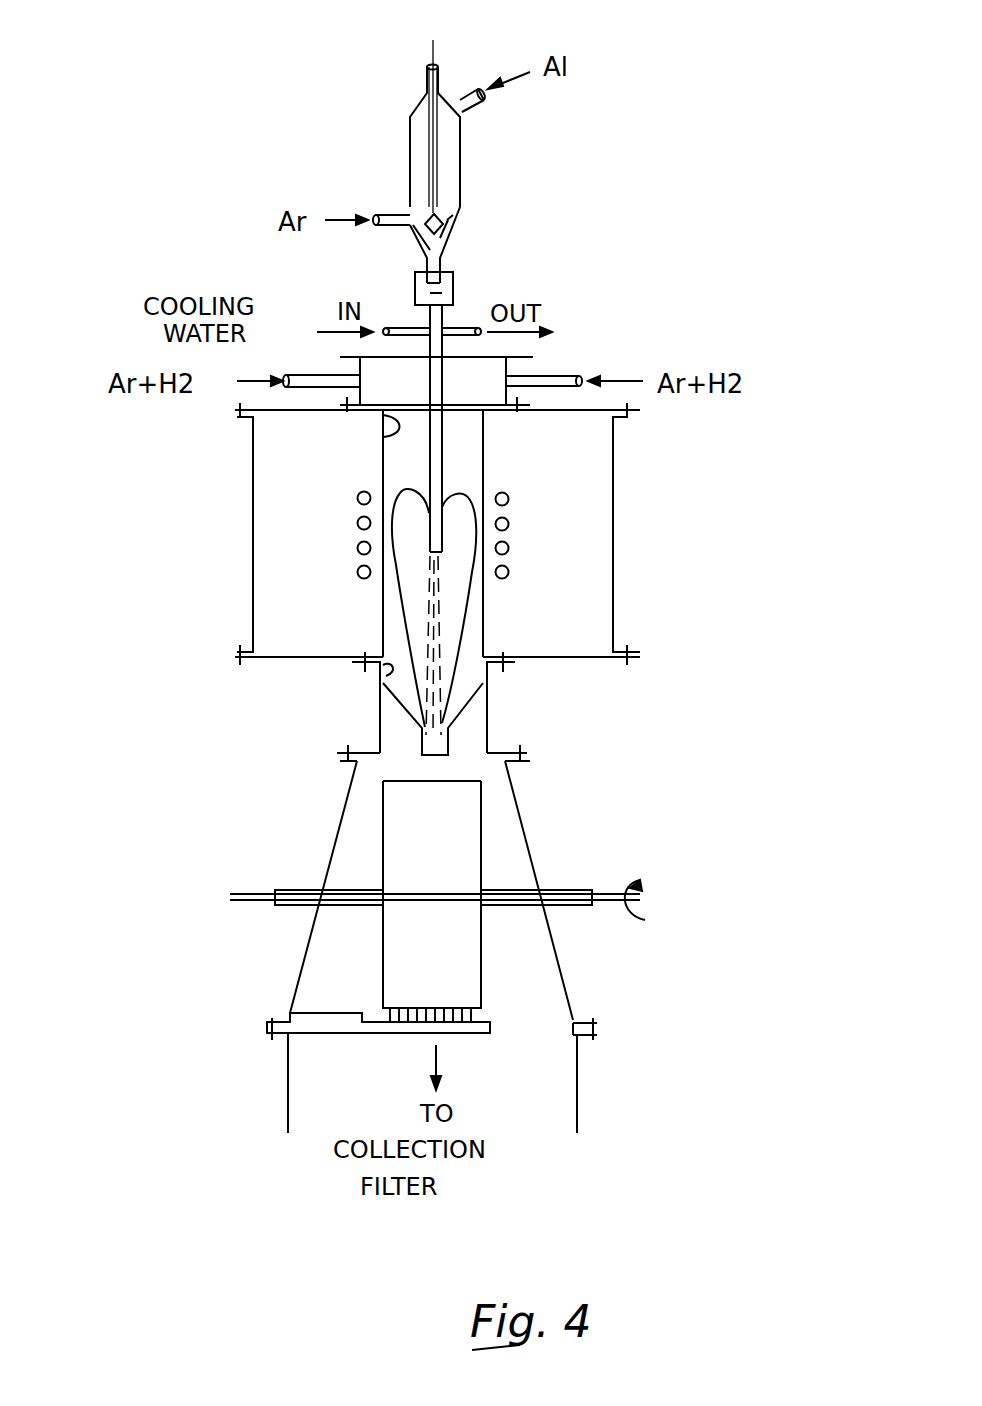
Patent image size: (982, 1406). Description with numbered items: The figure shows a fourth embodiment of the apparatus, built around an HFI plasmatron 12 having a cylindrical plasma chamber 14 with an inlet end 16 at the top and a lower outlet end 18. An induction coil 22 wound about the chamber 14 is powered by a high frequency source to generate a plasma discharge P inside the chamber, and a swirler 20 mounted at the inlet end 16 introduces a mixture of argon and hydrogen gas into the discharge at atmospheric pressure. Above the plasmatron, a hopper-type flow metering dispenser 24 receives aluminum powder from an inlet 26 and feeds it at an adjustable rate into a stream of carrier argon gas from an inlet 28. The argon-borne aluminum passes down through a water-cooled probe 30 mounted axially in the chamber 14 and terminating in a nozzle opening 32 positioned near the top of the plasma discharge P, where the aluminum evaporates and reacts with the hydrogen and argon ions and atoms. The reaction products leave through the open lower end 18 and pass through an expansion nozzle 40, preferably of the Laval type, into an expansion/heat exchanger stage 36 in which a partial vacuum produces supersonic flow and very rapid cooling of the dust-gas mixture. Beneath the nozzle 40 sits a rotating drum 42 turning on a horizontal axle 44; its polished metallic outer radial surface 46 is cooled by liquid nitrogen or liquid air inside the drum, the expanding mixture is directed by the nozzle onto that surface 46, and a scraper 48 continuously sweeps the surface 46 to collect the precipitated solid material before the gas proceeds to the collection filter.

The HFI plasmatron 12 is at (253, 505).
The plasma chamber 14 is at (483, 618).
The inlet end 16 is at (385, 437).
The lower outlet end 18 is at (383, 668).
The swirler 20 is at (507, 367).
The induction coil 22 is at (510, 525).
The hopper-type flow metering dispenser 24 is at (460, 165).
The aluminum inlet 26 is at (465, 93).
The argon inlet 28 is at (392, 208).
The probe 30 is at (442, 455).
The nozzle opening 32 is at (435, 552).
The expansion/heat exchanger stage 36 is at (567, 985).
The expansion nozzle 40 is at (420, 745).
The rotating drum 42 is at (383, 828).
The horizontal axle 44 is at (265, 898).
The outer radial surface 46 is at (460, 780).
The scraper 48 is at (493, 1030).
The plasma discharge P is at (483, 487).